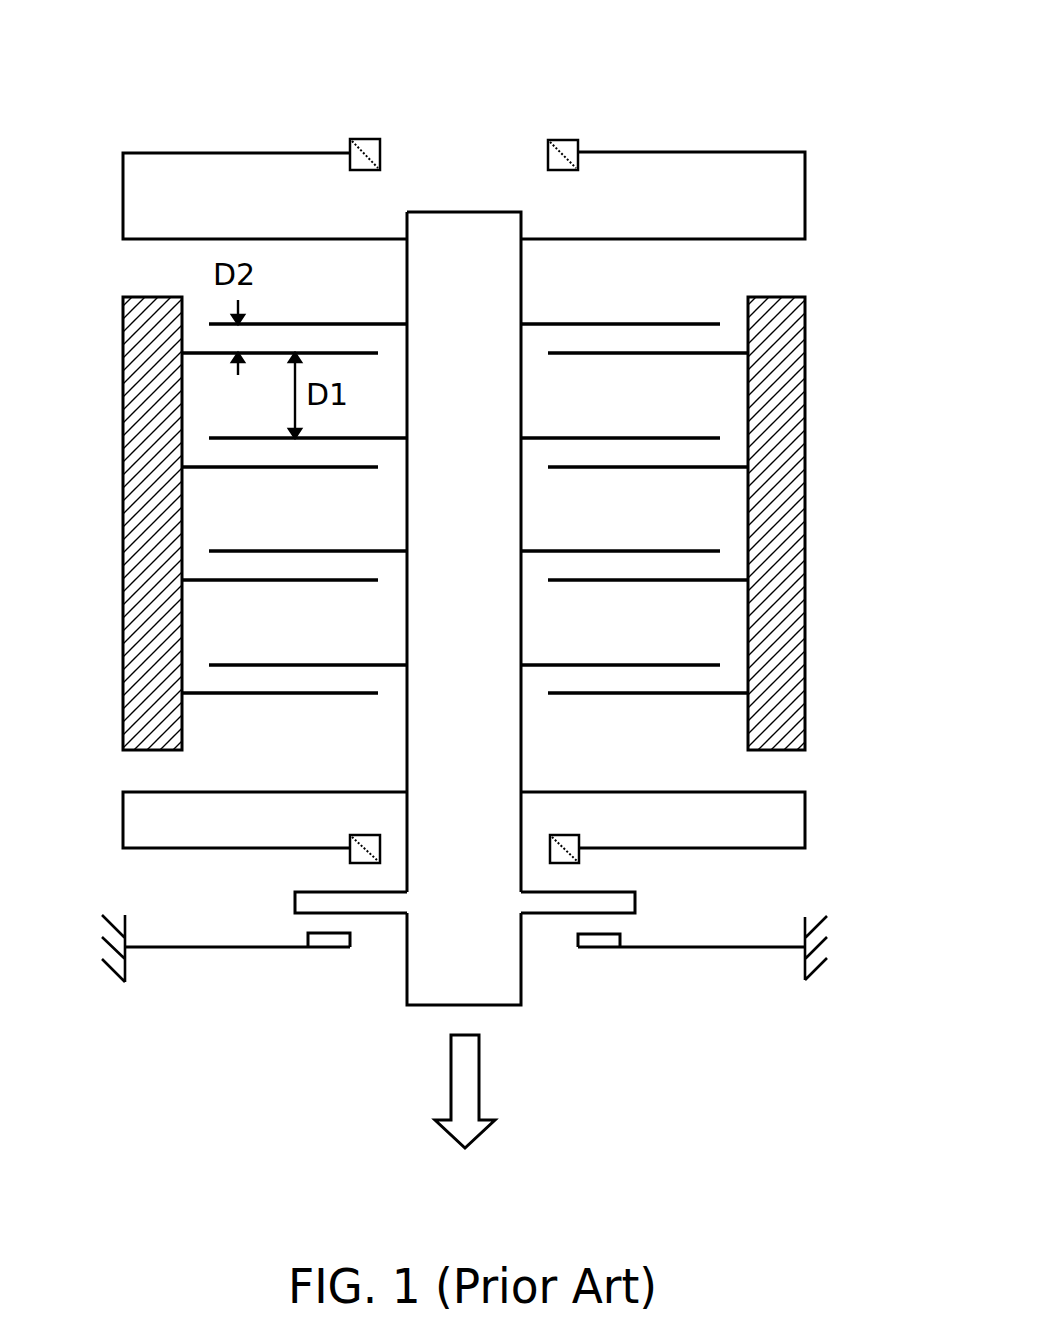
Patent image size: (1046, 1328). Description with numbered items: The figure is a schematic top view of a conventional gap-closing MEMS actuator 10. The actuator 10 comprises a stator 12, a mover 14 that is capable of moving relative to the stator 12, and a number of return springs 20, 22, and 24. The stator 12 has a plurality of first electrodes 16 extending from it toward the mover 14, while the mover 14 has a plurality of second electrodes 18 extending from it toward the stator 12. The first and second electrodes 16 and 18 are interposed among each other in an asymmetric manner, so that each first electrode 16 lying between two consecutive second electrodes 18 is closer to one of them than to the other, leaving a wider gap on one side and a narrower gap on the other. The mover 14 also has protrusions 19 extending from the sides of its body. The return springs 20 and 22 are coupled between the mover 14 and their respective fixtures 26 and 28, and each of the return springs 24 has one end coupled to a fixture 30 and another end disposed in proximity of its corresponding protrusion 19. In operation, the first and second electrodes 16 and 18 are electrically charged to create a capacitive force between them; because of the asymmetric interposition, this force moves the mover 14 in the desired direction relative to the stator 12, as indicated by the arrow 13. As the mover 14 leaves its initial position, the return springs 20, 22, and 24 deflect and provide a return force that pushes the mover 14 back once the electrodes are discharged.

The MEMS actuator 10 is at (783, 97).
The stator 12 is at (777, 373).
The arrow 13 is at (482, 1062).
The mover 14 is at (443, 235).
The first electrodes 16 is at (580, 355).
The second electrodes 18 is at (615, 322).
The protrusions 19 is at (621, 890).
The return spring 20 is at (807, 197).
The return spring 22 is at (807, 822).
The return springs 24 is at (677, 950).
The fixture 26 is at (565, 143).
The fixture 28 is at (353, 857).
The fixture 30 is at (820, 947).